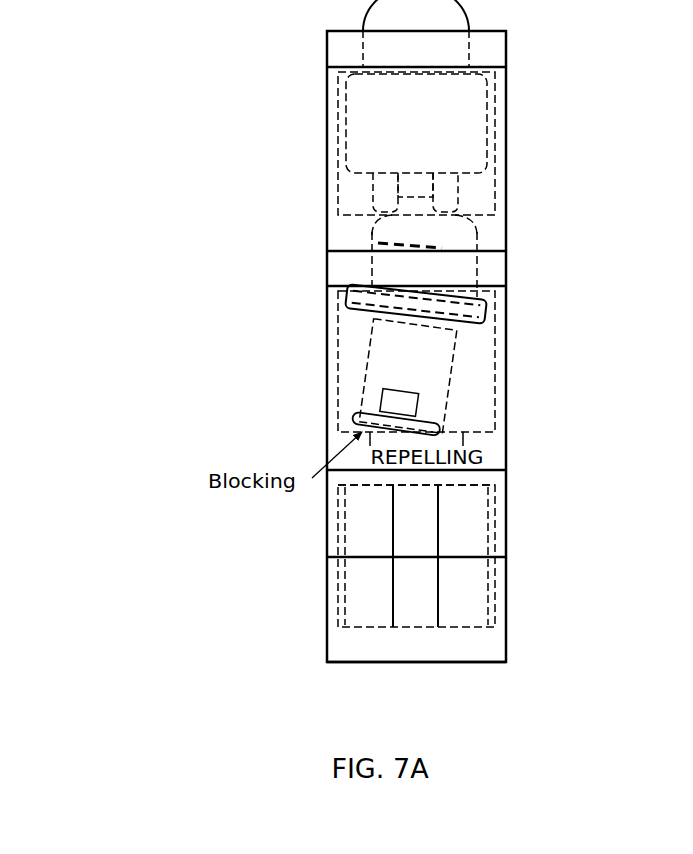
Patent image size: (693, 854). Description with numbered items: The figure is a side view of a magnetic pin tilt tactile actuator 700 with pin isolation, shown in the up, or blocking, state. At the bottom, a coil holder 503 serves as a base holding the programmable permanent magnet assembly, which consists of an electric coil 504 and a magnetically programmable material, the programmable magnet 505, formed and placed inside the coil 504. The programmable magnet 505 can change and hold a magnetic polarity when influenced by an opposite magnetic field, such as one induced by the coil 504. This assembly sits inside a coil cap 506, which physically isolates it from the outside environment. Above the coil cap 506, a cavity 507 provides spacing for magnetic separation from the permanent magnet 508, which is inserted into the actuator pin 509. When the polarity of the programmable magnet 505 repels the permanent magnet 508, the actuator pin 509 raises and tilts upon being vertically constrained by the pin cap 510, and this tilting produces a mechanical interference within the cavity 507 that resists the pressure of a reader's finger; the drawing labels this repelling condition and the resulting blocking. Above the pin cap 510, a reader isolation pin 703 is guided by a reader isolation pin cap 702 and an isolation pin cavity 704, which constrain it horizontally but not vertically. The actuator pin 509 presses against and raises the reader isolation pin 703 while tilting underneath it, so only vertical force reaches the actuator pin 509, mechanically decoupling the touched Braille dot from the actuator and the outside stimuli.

The magnetic pin tilt tactile actuator with pin isolation 700 is at (416, 680).
The reader isolation pin cap 702 is at (342, 54).
The reader isolation pin 703 is at (460, 117).
The isolation pin cavity 704 is at (490, 232).
The actuator pin 509 is at (383, 232).
The pin cap 510 is at (345, 273).
The permanent magnet 508 is at (372, 407).
The cavity 507 is at (492, 385).
The coil cap 506 is at (497, 481).
The electric coil 504 is at (367, 547).
The programmable magnet 505 is at (397, 595).
The coil holder 503 is at (497, 640).